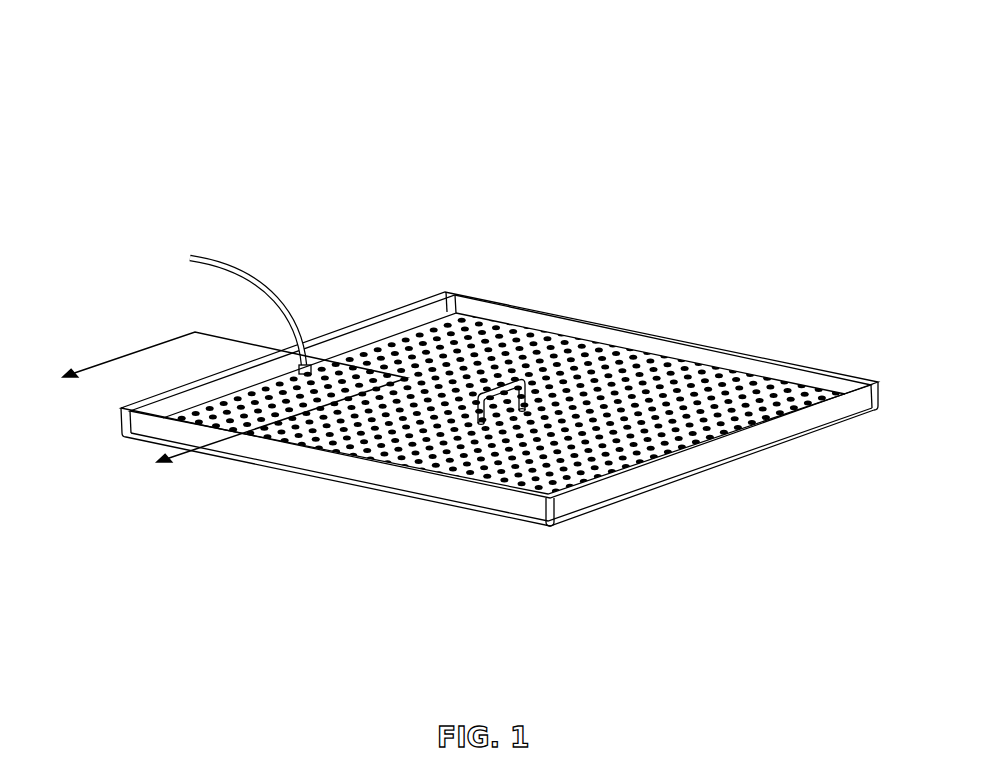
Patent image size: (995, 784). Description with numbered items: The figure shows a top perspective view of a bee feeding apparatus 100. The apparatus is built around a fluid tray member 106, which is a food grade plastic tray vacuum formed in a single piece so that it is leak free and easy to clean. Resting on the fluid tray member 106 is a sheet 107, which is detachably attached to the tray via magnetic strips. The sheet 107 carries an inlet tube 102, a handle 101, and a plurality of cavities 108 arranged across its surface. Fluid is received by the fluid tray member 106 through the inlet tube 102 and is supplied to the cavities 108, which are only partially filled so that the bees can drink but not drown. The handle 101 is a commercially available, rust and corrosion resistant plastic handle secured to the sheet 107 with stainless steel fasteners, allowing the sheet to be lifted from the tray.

The bee feeding apparatus 100 is at (460, 295).
The handle 101 is at (511, 382).
The inlet tube 102 is at (241, 263).
The fluid tray member 106 is at (355, 490).
The sheet 107 is at (389, 340).
The cavities 108 is at (722, 377).